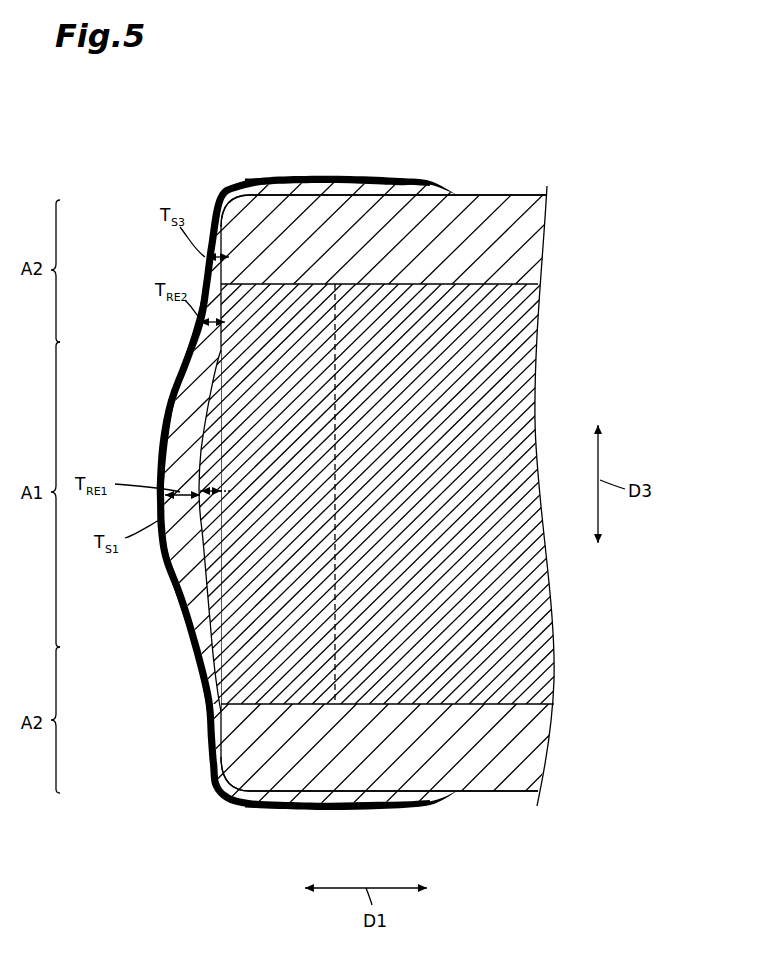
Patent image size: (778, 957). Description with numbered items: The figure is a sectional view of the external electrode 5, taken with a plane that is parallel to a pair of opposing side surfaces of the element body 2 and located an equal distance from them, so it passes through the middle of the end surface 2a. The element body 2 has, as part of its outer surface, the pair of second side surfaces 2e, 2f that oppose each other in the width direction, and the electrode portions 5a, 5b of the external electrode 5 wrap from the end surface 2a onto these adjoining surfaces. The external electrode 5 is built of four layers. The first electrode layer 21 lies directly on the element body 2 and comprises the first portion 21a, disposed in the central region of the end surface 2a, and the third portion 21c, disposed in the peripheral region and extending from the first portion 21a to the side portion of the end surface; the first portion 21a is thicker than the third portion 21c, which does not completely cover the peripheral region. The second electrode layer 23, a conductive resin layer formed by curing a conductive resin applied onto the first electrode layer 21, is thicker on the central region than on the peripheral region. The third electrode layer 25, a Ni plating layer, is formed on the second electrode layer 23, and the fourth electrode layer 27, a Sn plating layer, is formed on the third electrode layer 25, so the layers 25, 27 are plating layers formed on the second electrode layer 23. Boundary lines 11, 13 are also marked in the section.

The element body 2 is at (530, 232).
The end surface 2a is at (198, 432).
The second side surface 2e is at (478, 195).
The second side surface 2f is at (480, 800).
The external electrode 5 is at (215, 189).
The electrode portion 5a is at (163, 568).
The electrode portion 5b is at (352, 178).
The boundary line 11 is at (310, 280).
The boundary line 13 is at (335, 704).
The first electrode layer 21 is at (212, 393).
The first portion 21a is at (217, 472).
The third portion 21c is at (219, 240).
The second electrode layer 23 is at (168, 548).
The third electrode layer 25 is at (207, 753).
The fourth electrode layer 27 is at (212, 787).